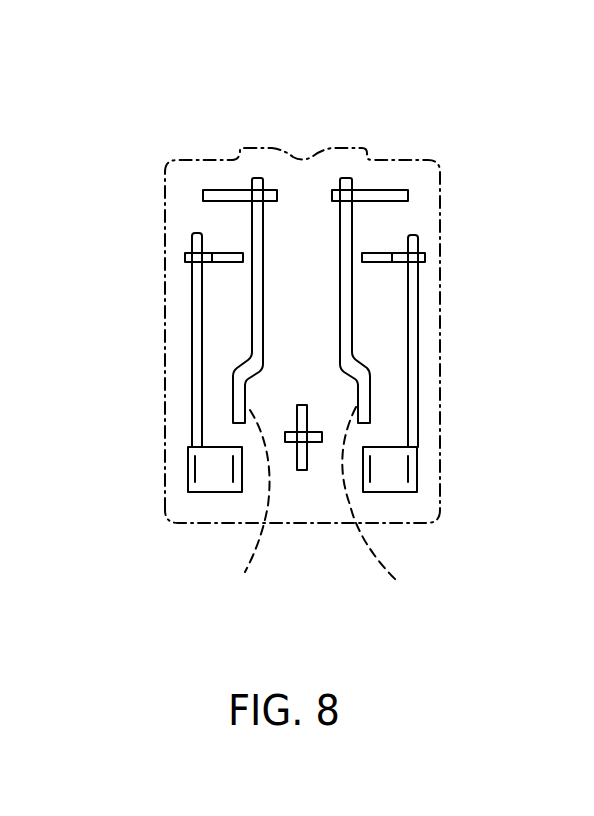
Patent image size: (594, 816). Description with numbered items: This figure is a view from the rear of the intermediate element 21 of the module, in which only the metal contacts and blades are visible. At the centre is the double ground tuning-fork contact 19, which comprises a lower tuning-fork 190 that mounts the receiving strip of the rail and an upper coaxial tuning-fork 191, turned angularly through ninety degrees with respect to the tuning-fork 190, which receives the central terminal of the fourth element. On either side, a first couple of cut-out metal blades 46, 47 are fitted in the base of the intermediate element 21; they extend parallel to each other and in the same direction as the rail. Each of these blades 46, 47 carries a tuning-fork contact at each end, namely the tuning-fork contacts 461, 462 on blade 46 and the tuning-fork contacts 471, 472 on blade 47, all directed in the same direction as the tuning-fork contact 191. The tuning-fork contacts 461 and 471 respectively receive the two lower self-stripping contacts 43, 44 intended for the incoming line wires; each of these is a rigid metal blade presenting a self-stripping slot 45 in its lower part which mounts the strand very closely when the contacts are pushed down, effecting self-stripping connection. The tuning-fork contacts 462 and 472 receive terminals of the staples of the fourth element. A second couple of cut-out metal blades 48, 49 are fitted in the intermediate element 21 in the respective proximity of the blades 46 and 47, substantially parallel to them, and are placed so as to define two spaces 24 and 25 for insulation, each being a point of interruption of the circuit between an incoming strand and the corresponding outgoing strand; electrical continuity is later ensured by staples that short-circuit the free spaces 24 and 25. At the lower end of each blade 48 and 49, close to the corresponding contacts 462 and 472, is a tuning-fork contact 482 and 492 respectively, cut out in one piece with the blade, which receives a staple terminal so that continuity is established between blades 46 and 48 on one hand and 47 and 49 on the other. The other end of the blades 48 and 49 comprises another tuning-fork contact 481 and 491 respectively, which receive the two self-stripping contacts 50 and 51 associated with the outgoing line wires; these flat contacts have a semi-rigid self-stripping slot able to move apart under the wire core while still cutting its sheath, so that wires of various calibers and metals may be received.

The intermediate element 21 is at (190, 162).
The tuning-fork contact 481 is at (262, 178).
The tuning-fork contact 491 is at (349, 178).
The self-stripping contact 50 is at (218, 190).
The self-stripping contact 51 is at (402, 190).
The self-stripping slot 45 is at (219, 250).
The tuning-fork contact 461 is at (185, 253).
The tuning-fork contact 471 is at (425, 252).
The self-stripping contact 43 is at (229, 263).
The self-stripping contact 44 is at (377, 263).
The cut-out metal blade 48 is at (177, 347).
The cut-out metal blade 49 is at (413, 348).
The cut-out metal blade 46 is at (155, 402).
The cut-out metal blade 47 is at (443, 403).
The space for insulation 24 is at (232, 434).
The space for insulation 25 is at (381, 433).
The tuning-fork contact 462 is at (247, 477).
The tuning-fork contact 472 is at (388, 490).
The tuning-fork contact 482 is at (233, 509).
The tuning-fork contact 492 is at (399, 508).
The upper tuning-fork 191 is at (298, 405).
The lower tuning-fork 190 is at (318, 442).
The double tuning-fork contact 19 is at (344, 491).